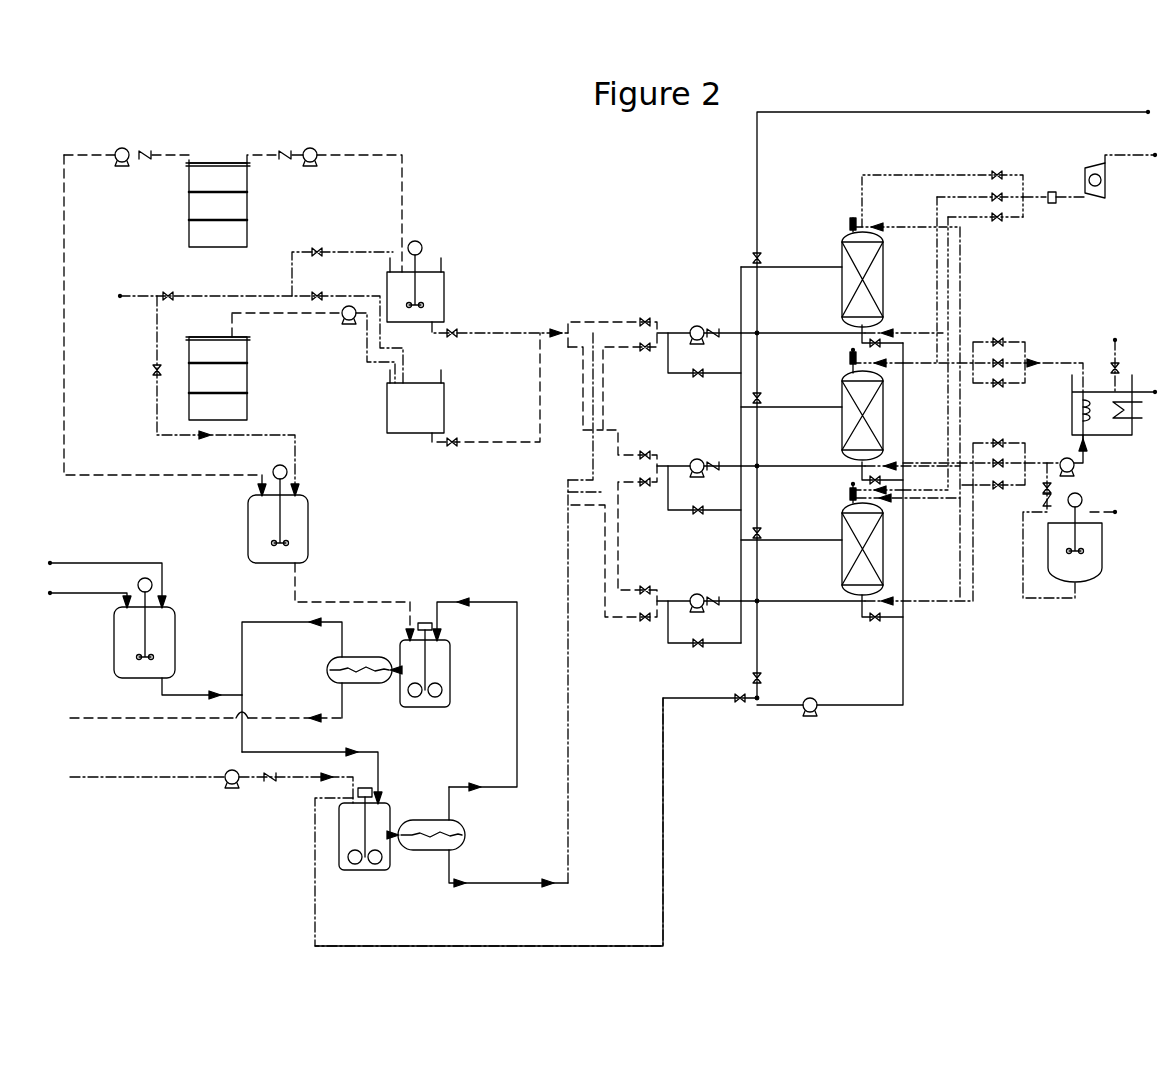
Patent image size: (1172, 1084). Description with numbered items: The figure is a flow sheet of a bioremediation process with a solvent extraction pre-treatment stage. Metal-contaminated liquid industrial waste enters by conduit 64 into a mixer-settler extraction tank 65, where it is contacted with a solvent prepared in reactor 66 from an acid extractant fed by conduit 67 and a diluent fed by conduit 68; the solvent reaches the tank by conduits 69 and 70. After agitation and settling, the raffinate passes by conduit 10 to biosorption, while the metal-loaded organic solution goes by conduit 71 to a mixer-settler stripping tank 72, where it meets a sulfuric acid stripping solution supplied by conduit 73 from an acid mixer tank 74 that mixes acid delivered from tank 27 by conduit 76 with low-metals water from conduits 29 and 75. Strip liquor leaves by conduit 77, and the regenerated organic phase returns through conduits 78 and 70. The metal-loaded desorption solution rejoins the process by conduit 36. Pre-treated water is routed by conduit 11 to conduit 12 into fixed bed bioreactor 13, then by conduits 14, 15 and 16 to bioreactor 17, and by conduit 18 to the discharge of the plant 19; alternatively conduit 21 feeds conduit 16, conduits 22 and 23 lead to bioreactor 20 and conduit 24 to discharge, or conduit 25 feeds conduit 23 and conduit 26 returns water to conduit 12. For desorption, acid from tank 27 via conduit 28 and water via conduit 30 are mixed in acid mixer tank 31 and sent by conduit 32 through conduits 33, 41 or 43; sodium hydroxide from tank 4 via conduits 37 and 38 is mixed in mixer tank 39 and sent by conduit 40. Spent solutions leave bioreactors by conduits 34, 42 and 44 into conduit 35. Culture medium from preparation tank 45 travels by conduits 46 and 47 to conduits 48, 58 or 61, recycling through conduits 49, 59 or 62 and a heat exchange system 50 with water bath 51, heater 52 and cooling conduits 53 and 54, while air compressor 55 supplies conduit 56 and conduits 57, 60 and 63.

The tank 4 is at (247, 386).
The conduit 10 is at (530, 883).
The conduit 11 is at (636, 352).
The conduit 12 is at (846, 340).
The fixed bed bioreactor 13 is at (842, 285).
The conduit 14 is at (812, 267).
The conduit 15 is at (668, 504).
The conduit 16 is at (846, 478).
The fixed bed bioreactor 17 is at (842, 422).
The conduit 18 is at (812, 407).
The discharge of the plant 19 is at (1128, 112).
The fixed bed bioreactor 20 is at (842, 558).
The conduit 21 is at (636, 482).
The conduit 22 is at (668, 622).
The conduit 23 is at (850, 605).
The conduit 24 is at (812, 540).
The conduit 25 is at (636, 618).
The conduit 26 is at (668, 362).
The tank 27 is at (247, 214).
The conduit 28 is at (360, 157).
The feeding conduit 29 is at (140, 299).
The conduit 30 is at (358, 248).
The acid mixer tank 31 is at (444, 292).
The conduit 32 is at (540, 330).
The conduit 33 is at (614, 318).
The conduit 34 is at (896, 356).
The conduit 35 is at (904, 638).
The conduit 36 is at (566, 946).
The conduit 37 is at (367, 352).
The conduit 38 is at (406, 350).
The sodium hydroxide mixer tank 39 is at (444, 395).
The conduit 40 is at (500, 440).
The conduit 41 is at (634, 435).
The conduit 42 is at (900, 488).
The conduit 43 is at (580, 435).
The conduit 44 is at (888, 620).
The culture medium preparation tank 45 is at (1048, 552).
The conduit 46 is at (1046, 600).
The conduit 47 is at (1050, 363).
The conduit 48 is at (974, 262).
The conduit 49 is at (912, 330).
The heat exchange system 50 is at (1072, 414).
The water bath 51 is at (1110, 440).
The heater 52 is at (1140, 418).
The conduit 53 is at (1118, 352).
The conduit 54 is at (1142, 390).
The air compressor 55 is at (1106, 192).
The conduit 56 is at (1035, 200).
The conduit 57 is at (910, 175).
The conduit 58 is at (926, 363).
The conduit 59 is at (936, 466).
The conduit 60 is at (937, 214).
The conduit 61 is at (930, 498).
The conduit 62 is at (934, 600).
The conduit 63 is at (1010, 220).
The conduit 64 is at (150, 780).
The mixer-settler extraction tank 65 is at (390, 822).
The reactor 66 is at (118, 678).
The conduit 67 is at (105, 593).
The conduit 68 is at (84, 563).
The conduit 69 is at (185, 695).
The conduit 70 is at (242, 736).
The conduit 71 is at (517, 700).
The mixer-settler stripping tank 72 is at (436, 707).
The conduit 73 is at (362, 605).
The acid mixer tank 74 is at (252, 565).
The conduit 75 is at (157, 418).
The conduit 76 is at (64, 362).
The conduit 77 is at (130, 722).
The conduit 78 is at (266, 624).